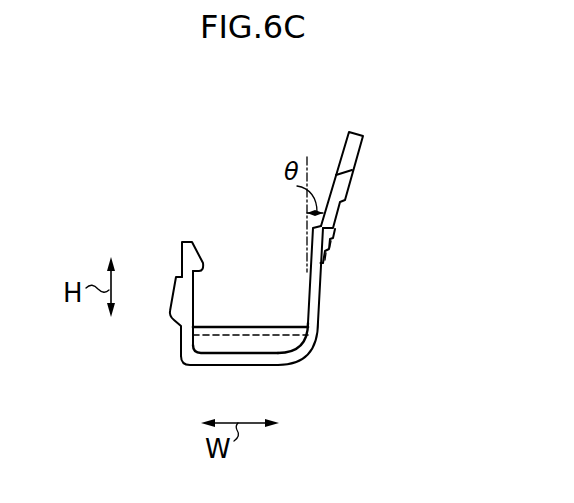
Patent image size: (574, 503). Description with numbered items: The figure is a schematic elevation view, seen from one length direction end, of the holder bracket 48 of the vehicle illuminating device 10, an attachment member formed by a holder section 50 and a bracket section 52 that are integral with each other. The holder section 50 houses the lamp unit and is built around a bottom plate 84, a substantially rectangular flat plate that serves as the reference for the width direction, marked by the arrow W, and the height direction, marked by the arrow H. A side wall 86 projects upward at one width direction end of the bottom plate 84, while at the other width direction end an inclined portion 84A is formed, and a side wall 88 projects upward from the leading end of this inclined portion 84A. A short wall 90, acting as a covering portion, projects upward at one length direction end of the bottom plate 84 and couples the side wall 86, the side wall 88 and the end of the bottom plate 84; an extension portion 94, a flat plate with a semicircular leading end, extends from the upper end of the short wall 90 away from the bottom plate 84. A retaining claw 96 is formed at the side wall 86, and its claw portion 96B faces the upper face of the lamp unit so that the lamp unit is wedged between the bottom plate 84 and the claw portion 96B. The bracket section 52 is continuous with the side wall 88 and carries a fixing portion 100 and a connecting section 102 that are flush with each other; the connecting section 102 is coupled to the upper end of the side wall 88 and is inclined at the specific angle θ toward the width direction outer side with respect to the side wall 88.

The vehicle illuminating device 10 is at (292, 256).
The holder bracket 48 is at (212, 170).
The holder section 50 is at (330, 330).
The bracket section 52 is at (373, 201).
The bottom plate 84 is at (270, 366).
The inclined portion 84A is at (310, 352).
The side wall 86 is at (176, 332).
The side wall 88 is at (320, 302).
The short wall 90 is at (226, 344).
The extension portion 94 is at (236, 327).
The retaining claw 96 is at (191, 234).
The claw portion 96B is at (182, 252).
The fixing portion 100 is at (342, 153).
The connecting section 102 is at (328, 257).